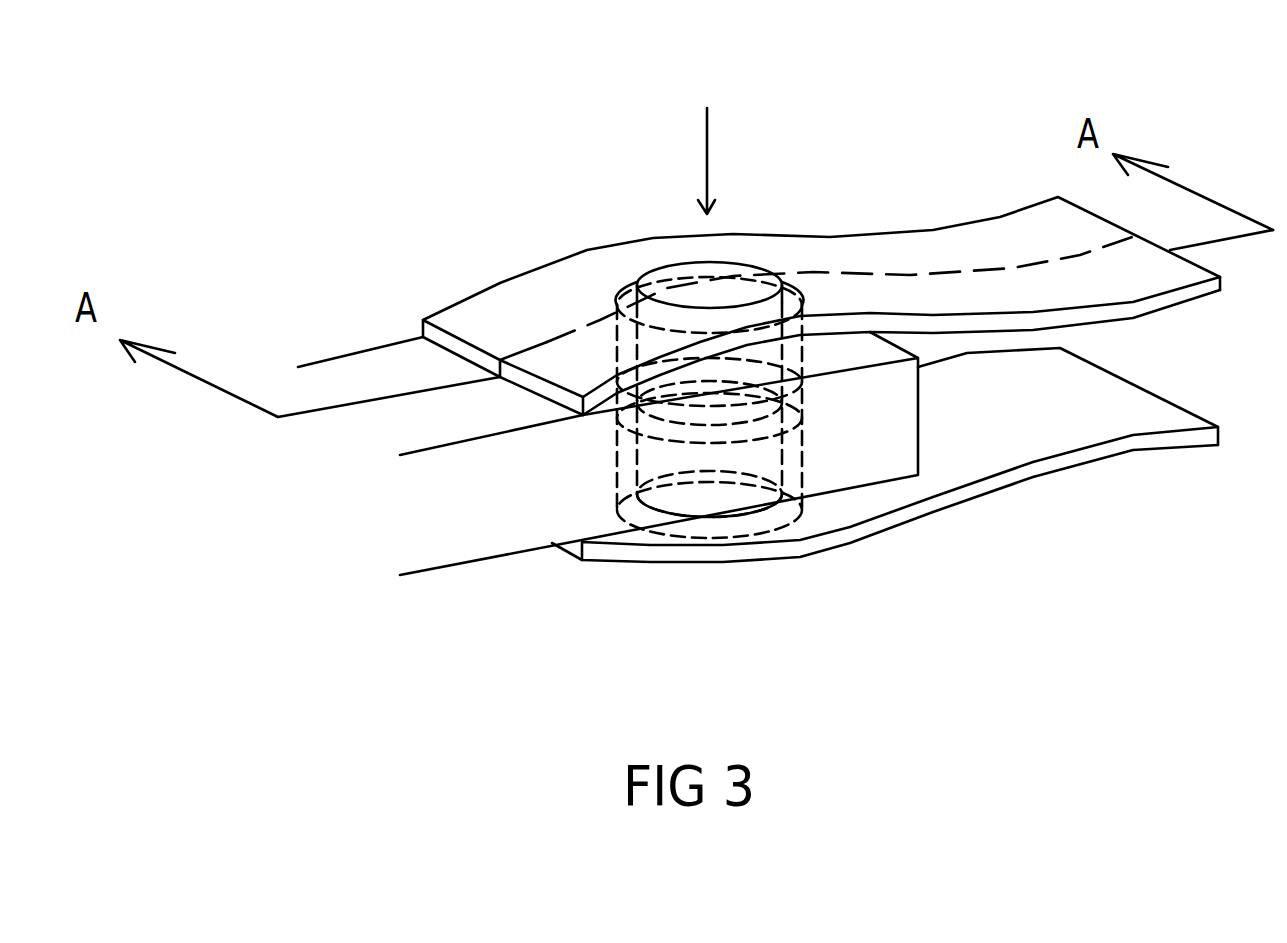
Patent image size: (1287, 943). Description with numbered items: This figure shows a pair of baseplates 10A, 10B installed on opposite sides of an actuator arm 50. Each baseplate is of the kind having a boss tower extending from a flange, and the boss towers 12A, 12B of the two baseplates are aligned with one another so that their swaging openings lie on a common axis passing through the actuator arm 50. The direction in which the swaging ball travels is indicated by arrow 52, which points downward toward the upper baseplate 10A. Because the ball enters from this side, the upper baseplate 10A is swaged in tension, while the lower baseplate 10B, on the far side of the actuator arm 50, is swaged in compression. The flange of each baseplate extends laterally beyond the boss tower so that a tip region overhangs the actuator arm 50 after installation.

The baseplate 10A is at (936, 146).
The baseplate 10B is at (939, 552).
The boss tower 12A is at (617, 369).
The boss tower 12B is at (617, 461).
The actuator arm 50 is at (848, 450).
The arrow 52 is at (710, 144).